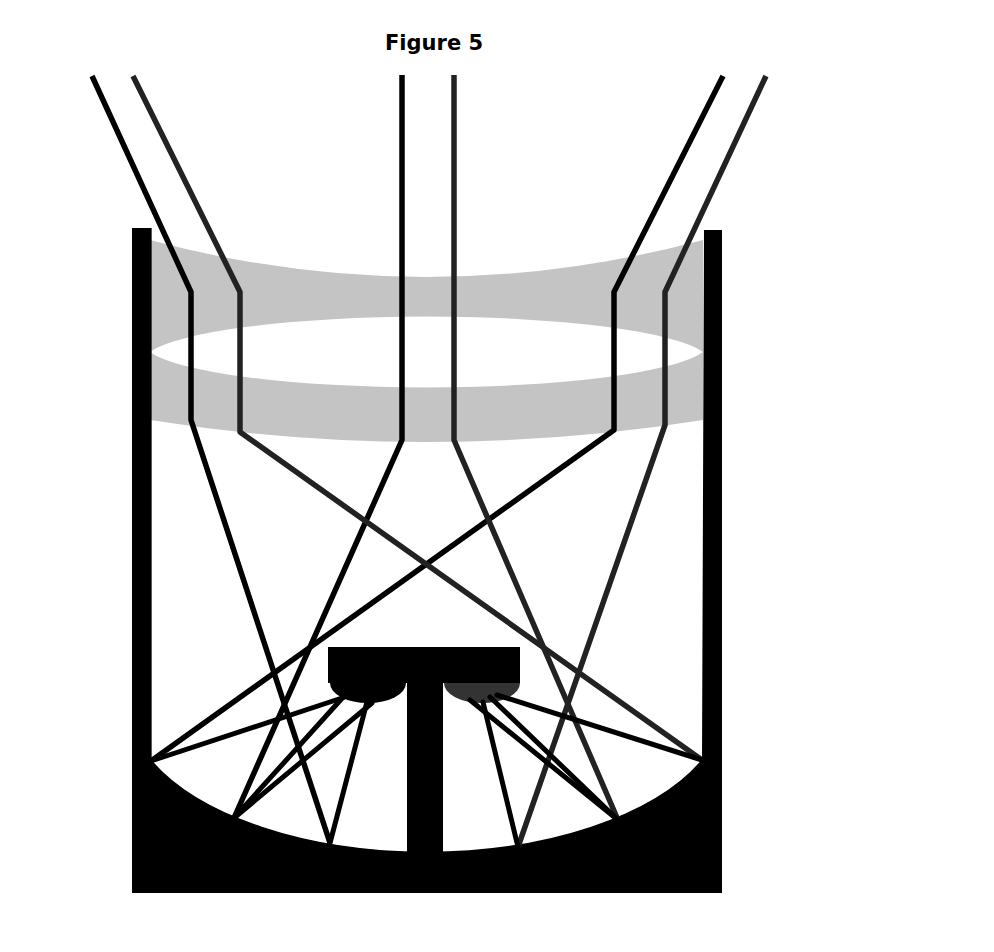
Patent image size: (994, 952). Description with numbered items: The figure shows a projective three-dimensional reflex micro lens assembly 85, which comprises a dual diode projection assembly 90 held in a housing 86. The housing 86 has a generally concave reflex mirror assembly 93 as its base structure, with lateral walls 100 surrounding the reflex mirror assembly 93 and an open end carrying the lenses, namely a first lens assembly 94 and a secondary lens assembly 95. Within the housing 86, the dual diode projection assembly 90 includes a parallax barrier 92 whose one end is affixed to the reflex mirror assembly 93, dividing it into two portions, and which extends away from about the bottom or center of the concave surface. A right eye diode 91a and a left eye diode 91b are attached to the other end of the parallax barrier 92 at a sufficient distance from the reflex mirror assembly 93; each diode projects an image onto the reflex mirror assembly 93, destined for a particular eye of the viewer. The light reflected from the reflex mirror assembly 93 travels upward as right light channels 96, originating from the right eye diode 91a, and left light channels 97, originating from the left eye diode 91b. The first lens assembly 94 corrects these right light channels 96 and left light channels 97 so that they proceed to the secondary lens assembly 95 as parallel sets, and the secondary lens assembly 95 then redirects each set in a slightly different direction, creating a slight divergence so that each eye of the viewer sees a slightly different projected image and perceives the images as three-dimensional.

The projective 3D reflex micro lens assembly 85 is at (396, 882).
The housing 86 is at (112, 494).
The dual diode projection assembly 90 is at (424, 651).
The right eye diode 91a is at (510, 688).
The left eye diode 91b is at (330, 680).
The parallax barrier 92 is at (447, 767).
The reflex mirror assembly 93 is at (663, 797).
The first lens assembly 94 is at (426, 397).
The secondary lens assembly 95 is at (426, 296).
The right light channels 96 is at (197, 203).
The left light channels 97 is at (120, 155).
The lateral walls 100 is at (427, 540).